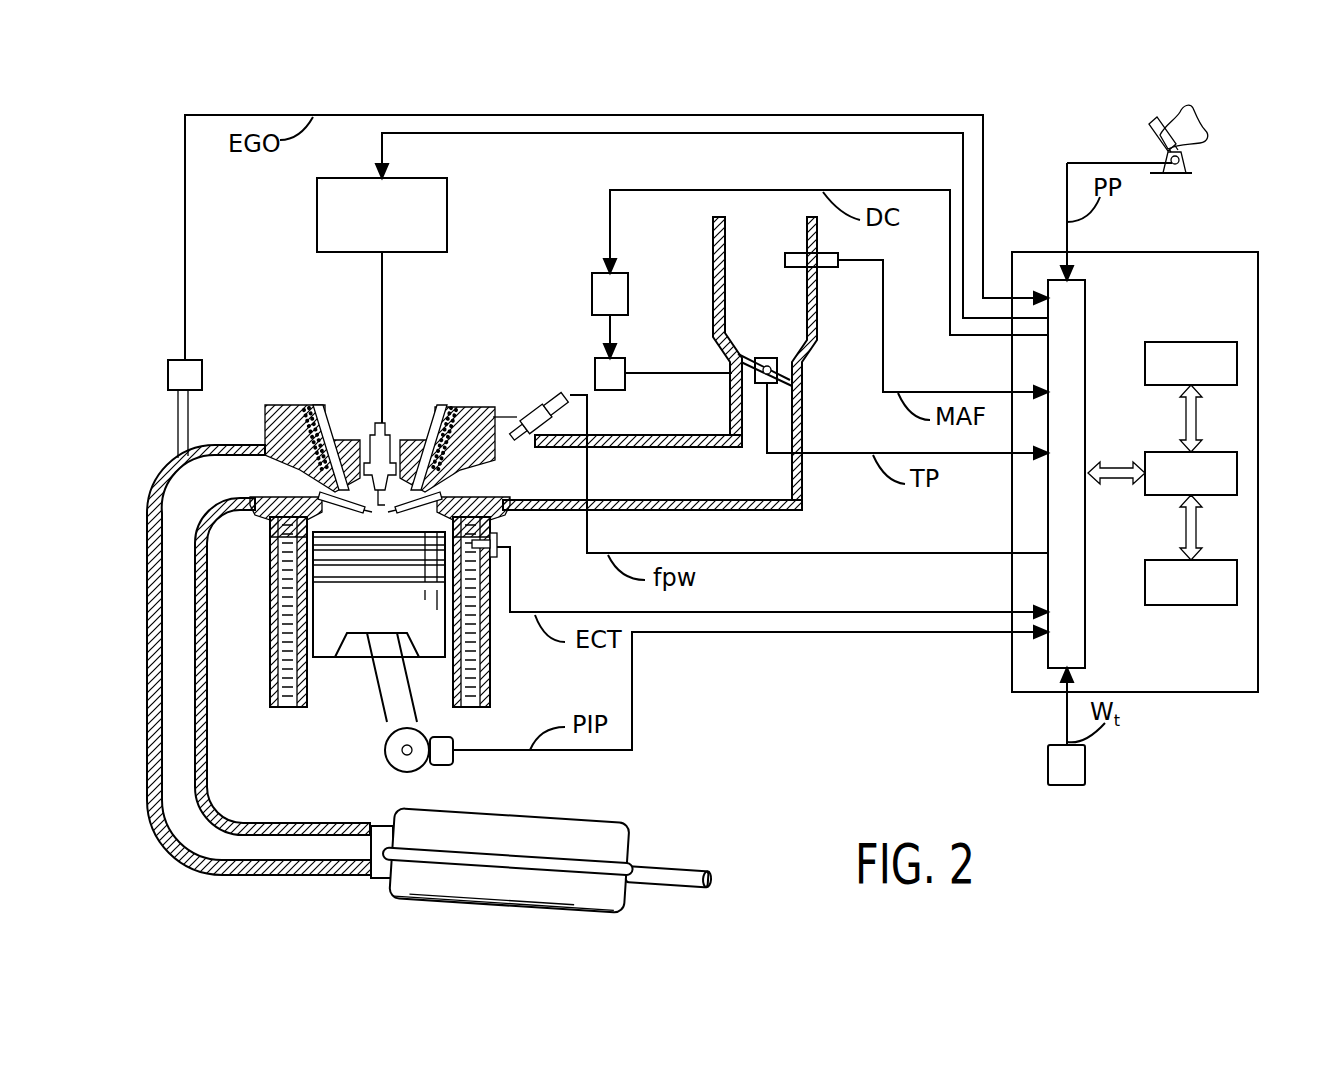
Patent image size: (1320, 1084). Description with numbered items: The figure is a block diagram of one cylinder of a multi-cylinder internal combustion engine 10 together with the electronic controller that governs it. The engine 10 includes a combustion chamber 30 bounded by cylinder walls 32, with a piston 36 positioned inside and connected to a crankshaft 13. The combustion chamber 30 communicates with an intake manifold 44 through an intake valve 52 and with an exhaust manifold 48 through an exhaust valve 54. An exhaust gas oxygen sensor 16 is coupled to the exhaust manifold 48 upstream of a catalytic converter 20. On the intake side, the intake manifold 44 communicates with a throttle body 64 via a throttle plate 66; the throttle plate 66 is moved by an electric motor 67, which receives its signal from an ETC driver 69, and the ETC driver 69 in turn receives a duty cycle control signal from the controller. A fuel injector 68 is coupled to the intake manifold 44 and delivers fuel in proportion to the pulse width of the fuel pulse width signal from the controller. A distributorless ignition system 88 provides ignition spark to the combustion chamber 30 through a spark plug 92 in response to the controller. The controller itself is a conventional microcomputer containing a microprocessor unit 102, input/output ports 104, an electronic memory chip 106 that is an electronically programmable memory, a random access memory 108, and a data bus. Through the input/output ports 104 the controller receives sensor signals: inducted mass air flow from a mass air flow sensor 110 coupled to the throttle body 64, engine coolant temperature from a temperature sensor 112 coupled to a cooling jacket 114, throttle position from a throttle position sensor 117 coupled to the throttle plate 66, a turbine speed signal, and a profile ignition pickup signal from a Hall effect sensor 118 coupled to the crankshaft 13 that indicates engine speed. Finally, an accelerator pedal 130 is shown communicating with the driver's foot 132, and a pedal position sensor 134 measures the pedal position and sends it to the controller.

The internal combustion engine 10 is at (310, 760).
The crankshaft 13 is at (387, 742).
The exhaust gas oxygen sensor 16 is at (202, 377).
The catalytic converter 20 is at (530, 815).
The combustion chamber 30 is at (348, 515).
The cylinder walls 32 is at (298, 707).
The piston 36 is at (367, 633).
The intake manifold 44 is at (702, 482).
The exhaust manifold 48 is at (165, 517).
The intake valve 52 is at (440, 492).
The exhaust valve 54 is at (322, 492).
The throttle body 64 is at (732, 288).
The throttle plate 66 is at (747, 357).
The electric motor 67 is at (607, 352).
The fuel injector 68 is at (537, 413).
The ETC driver 69 is at (607, 267).
The distributorless ignition system 88 is at (447, 213).
The spark plug 92 is at (398, 440).
The microprocessor unit 102 is at (1160, 452).
The input/output ports 104 is at (1088, 328).
The electronic memory chip 106 is at (1227, 342).
The random access memory 108 is at (1163, 560).
The mass air flow sensor 110 is at (802, 252).
The temperature sensor 112 is at (497, 533).
The cooling jacket 114 is at (490, 690).
The throttle position sensor 117 is at (793, 372).
The Hall effect sensor 118 is at (445, 768).
The accelerator pedal 130 is at (1150, 127).
The driver's foot 132 is at (1206, 133).
The pedal position sensor 134 is at (1192, 165).